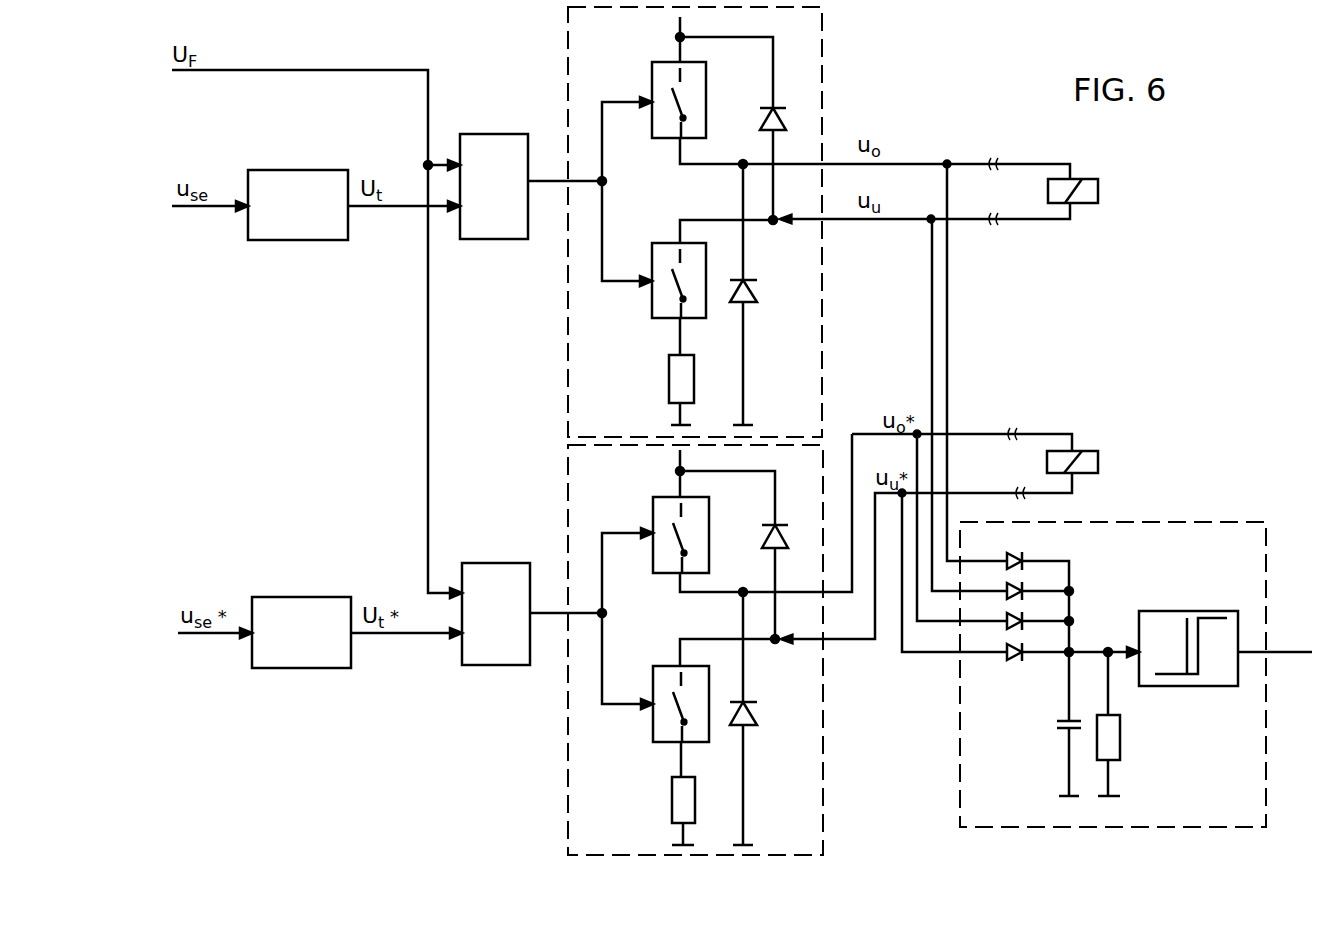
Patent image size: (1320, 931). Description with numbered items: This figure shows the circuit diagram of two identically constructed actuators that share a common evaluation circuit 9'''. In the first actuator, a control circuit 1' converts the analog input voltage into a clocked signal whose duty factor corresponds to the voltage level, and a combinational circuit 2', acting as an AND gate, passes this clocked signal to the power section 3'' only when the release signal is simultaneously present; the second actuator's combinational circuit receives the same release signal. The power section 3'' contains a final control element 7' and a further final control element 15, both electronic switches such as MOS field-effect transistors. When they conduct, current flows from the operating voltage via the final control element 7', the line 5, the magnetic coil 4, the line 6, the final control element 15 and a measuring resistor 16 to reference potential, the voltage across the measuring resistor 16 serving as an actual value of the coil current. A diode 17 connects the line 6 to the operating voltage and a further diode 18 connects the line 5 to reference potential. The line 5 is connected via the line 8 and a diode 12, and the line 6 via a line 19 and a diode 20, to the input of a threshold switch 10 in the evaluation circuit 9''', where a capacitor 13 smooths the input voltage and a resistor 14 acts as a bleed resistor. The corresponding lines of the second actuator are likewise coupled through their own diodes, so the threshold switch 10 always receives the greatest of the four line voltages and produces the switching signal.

The control circuit 1' is at (298, 230).
The combinational circuit 2' is at (494, 212).
The power section 3'' is at (729, 222).
The magnetic coil 4 is at (1082, 179).
The line 5 is at (963, 162).
The line 6 is at (958, 222).
The final control element 7' is at (697, 100).
The line 8 is at (950, 352).
The further final control element 15 is at (706, 287).
The measuring resistor 16 is at (668, 375).
The diode 17 is at (777, 133).
The further diode 18 is at (752, 302).
The line 19 is at (930, 362).
The common evaluation circuit 9''' is at (1138, 674).
The threshold switch 10 is at (1185, 688).
The diode 12 is at (1007, 557).
The capacitor 13 is at (1065, 732).
The resistor 14 is at (1120, 735).
The diode 20 is at (1007, 588).